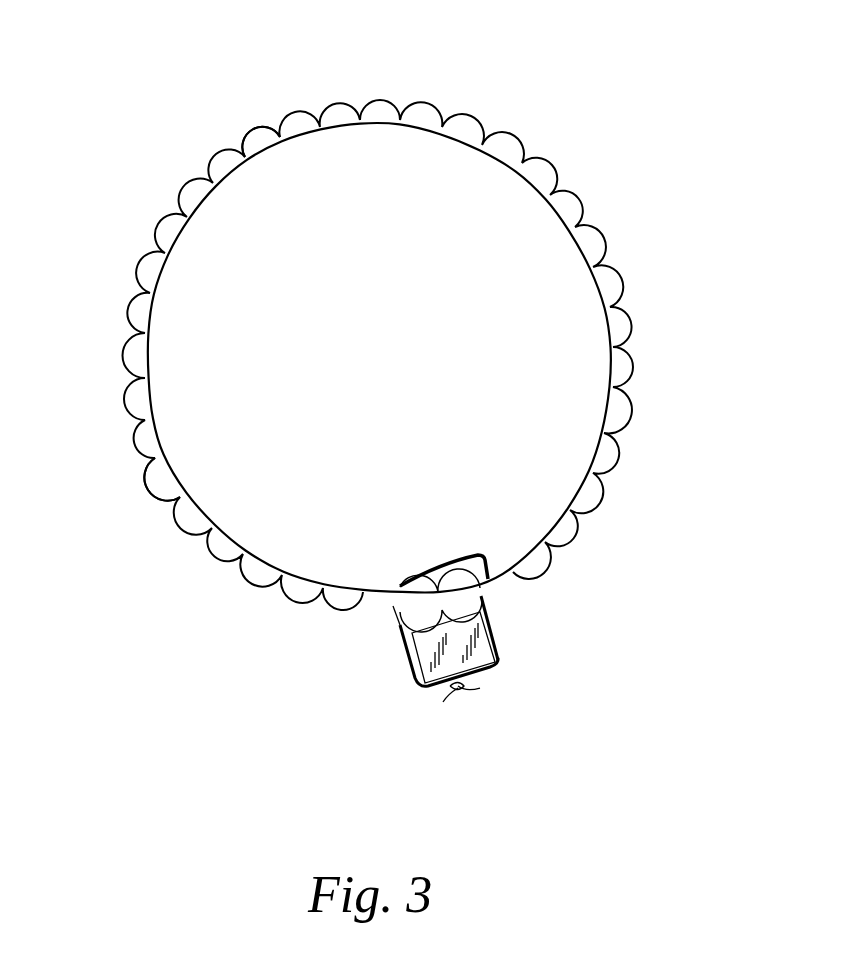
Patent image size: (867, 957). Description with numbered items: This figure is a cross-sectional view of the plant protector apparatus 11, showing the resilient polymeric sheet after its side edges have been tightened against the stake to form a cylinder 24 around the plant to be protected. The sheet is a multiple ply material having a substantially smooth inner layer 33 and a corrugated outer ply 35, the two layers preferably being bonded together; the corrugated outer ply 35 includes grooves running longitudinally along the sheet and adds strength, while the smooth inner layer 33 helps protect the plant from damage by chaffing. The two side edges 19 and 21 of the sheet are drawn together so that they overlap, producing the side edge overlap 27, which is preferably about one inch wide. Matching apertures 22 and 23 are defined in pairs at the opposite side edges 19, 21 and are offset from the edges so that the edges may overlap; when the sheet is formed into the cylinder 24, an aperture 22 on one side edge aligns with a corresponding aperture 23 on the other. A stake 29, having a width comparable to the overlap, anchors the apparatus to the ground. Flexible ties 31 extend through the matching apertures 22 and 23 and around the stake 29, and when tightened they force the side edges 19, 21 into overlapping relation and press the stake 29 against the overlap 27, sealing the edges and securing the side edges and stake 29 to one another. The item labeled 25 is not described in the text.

The plant protector apparatus 11 is at (396, 314).
The side edge 19 is at (412, 677).
The side edge 21 is at (459, 628).
The aperture 22 is at (500, 603).
The aperture 23 is at (397, 610).
The cylinder 24 is at (120, 533).
The scallops 25 is at (522, 163).
The side edge overlap 27 is at (400, 614).
The stake 29 is at (497, 640).
The flexible tie 31 is at (443, 702).
The smooth inner layer 33 is at (387, 128).
The corrugated outer ply 35 is at (262, 128).